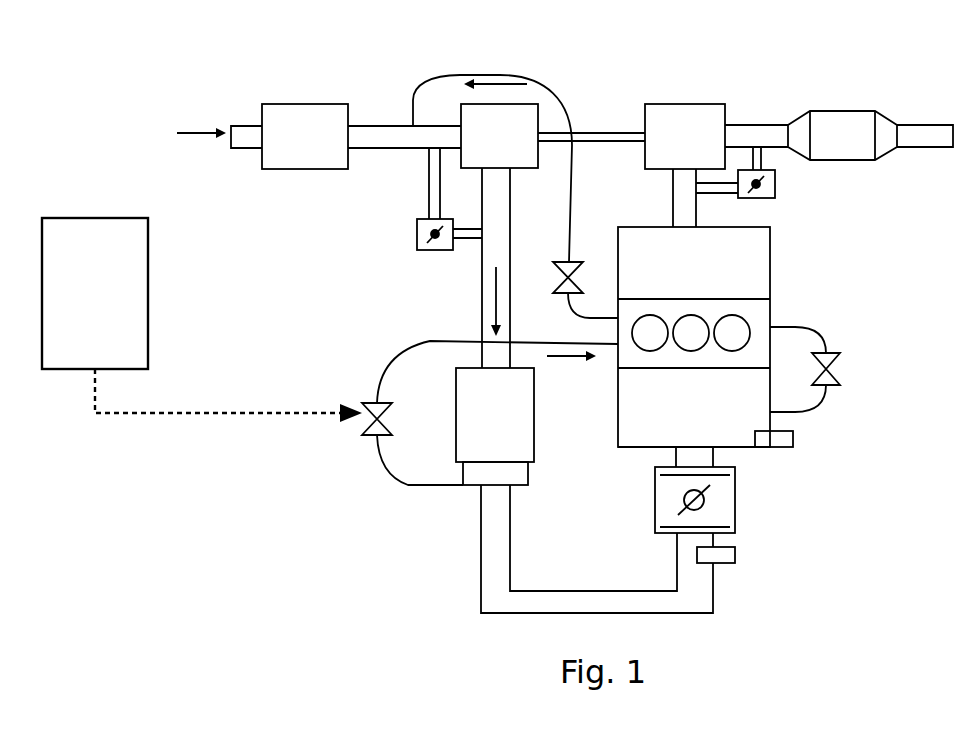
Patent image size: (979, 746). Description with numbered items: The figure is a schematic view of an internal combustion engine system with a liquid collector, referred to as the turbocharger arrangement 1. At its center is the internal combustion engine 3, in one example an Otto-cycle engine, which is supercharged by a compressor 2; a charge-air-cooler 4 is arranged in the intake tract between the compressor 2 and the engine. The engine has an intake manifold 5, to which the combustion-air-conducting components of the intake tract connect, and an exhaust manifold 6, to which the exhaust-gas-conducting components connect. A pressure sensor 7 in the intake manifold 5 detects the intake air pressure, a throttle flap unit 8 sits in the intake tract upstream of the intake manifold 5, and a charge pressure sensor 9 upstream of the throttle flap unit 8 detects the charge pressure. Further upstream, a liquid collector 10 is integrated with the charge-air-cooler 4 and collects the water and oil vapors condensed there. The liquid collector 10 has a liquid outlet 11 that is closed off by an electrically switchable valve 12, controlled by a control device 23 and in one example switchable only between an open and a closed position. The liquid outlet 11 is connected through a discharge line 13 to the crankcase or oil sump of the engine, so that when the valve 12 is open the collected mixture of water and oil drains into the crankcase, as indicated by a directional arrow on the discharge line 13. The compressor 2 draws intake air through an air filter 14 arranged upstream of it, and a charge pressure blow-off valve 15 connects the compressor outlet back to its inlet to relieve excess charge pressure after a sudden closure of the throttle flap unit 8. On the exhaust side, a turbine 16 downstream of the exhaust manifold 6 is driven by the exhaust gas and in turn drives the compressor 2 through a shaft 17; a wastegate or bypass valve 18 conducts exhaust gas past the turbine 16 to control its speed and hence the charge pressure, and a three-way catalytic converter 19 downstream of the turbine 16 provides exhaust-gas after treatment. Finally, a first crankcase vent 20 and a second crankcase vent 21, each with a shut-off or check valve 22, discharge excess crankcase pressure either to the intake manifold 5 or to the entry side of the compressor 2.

The turbocharger arrangement 1 is at (298, 290).
The compressor 2 is at (522, 165).
The internal combustion engine 3 is at (812, 306).
The charge-air-cooler 4 is at (525, 413).
The intake manifold 5 is at (639, 438).
The exhaust manifold 6 is at (772, 237).
The pressure sensor 7 is at (793, 442).
The throttle flap unit 8 is at (725, 503).
The charge pressure sensor 9 is at (735, 557).
The liquid collector 10 is at (527, 477).
The liquid outlet 11 is at (463, 487).
The electrically switchable valve 12 is at (358, 428).
The discharge line 13 is at (385, 477).
The air filter 14 is at (300, 166).
The charge pressure blow-off valve 15 is at (408, 249).
The turbine 16 is at (683, 110).
The shaft 17 is at (595, 133).
The wastegate or bypass valve 18 is at (777, 182).
The three-way catalytic converter 19 is at (843, 118).
The first crankcase vent 20 is at (823, 402).
The second crankcase vent 21 is at (533, 76).
The shut-off or check valve 22 is at (570, 258).
The control device 23 is at (100, 218).